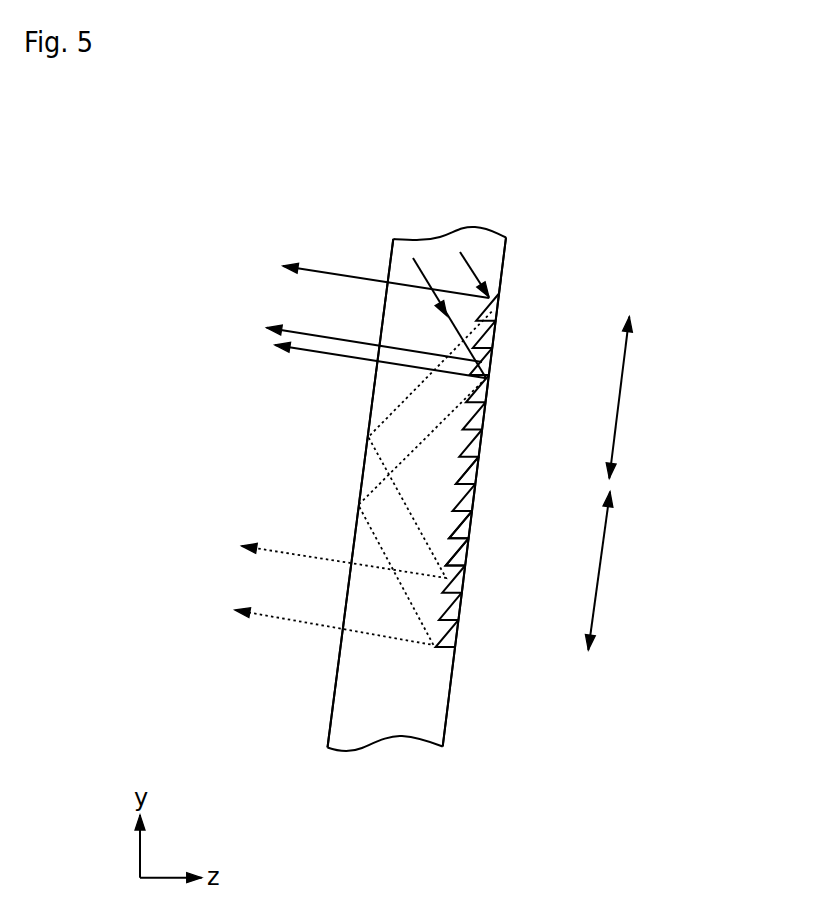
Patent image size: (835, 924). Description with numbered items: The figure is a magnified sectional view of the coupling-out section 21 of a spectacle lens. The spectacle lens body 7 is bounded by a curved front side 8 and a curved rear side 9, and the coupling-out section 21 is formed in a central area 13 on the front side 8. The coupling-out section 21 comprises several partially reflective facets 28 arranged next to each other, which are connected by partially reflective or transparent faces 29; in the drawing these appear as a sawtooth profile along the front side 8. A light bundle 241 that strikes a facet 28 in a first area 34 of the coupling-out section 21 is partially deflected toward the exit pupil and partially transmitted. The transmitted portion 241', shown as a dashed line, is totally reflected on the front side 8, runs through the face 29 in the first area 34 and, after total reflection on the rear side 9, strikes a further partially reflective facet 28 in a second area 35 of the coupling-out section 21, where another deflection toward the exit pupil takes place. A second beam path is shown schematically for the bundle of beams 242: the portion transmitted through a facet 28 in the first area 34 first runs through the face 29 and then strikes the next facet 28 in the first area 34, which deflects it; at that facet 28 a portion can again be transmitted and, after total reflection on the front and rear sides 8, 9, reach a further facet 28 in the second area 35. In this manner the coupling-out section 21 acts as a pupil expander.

The spectacle lens body 7 is at (348, 728).
The front side 8 is at (505, 271).
The rear side 9 is at (335, 688).
The central area 13 is at (485, 420).
The coupling-out section 21 is at (477, 473).
The partially reflective facet 28 is at (470, 528).
The face 29 is at (460, 556).
The light bundle 241 is at (445, 258).
The bundle of beams 242 is at (428, 271).
The transmitted portion 241' is at (363, 478).
The first area 34 is at (622, 392).
The second area 35 is at (600, 568).